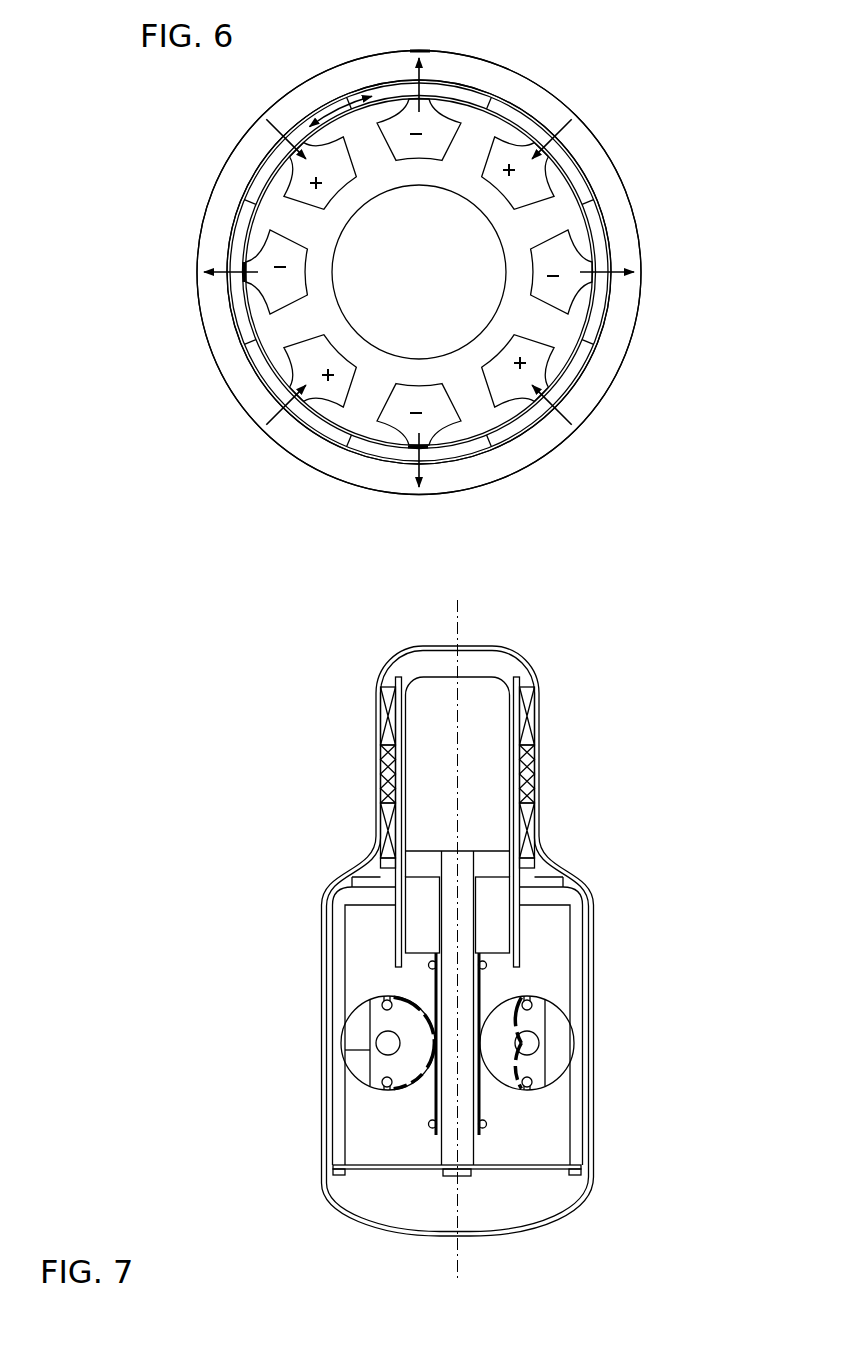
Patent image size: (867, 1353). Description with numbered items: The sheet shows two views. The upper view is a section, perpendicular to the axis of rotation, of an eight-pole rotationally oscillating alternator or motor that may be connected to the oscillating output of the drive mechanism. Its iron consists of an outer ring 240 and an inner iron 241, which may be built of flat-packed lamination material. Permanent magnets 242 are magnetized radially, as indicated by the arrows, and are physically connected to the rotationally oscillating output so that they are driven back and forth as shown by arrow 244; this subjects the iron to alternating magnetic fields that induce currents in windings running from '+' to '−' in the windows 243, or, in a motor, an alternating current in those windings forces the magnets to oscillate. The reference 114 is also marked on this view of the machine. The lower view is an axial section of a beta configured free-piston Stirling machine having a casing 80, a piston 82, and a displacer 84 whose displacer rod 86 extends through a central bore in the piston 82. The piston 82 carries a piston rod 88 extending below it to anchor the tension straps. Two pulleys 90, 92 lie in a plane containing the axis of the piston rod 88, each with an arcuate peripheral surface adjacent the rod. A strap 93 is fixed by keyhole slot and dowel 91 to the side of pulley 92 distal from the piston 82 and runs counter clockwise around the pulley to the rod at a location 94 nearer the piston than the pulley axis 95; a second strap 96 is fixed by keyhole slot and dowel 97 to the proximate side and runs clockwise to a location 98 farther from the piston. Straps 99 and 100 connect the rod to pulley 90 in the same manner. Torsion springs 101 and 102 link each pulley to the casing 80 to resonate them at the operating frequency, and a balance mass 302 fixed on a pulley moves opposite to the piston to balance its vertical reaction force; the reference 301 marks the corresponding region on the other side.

In FIG. 6, the rotor housing 114 is at (640, 232).
In FIG. 6, the outer ring 240 is at (535, 97).
In FIG. 6, the inner iron 241 is at (555, 218).
In FIG. 6, the permanent magnets 242 is at (572, 177).
In FIG. 6, the windows 243 is at (552, 295).
In FIG. 6, the arrow 244 is at (337, 95).
In FIG. 7, the casing 80 is at (593, 955).
In FIG. 7, the piston 82 is at (497, 899).
In FIG. 7, the displacer 84 is at (475, 720).
In FIG. 7, the displacer rod 86 is at (450, 863).
In FIG. 7, the piston rod 88 is at (482, 1103).
In FIG. 7, the pulley 90 is at (522, 1022).
In FIG. 7, the keyhole slot and dowel 91 is at (383, 1088).
In FIG. 7, the pulley 92 is at (382, 1022).
In FIG. 7, the strap 93 is at (420, 1078).
In FIG. 7, the location 94 is at (430, 963).
In FIG. 7, the pulley axis 95 is at (352, 1055).
In FIG. 7, the second strap 96 is at (434, 1103).
In FIG. 7, the keyhole slot and dowel 97 is at (385, 1003).
In FIG. 7, the location 98 is at (433, 1126).
In FIG. 7, the strap 99 is at (507, 1093).
In FIG. 7, the strap 100 is at (505, 998).
In FIG. 7, the torsion spring 101 is at (388, 1043).
In FIG. 7, the torsion spring 102 is at (538, 1042).
In FIG. 7, the left frame 301 is at (352, 1028).
In FIG. 7, the balance mass 302 is at (560, 1058).